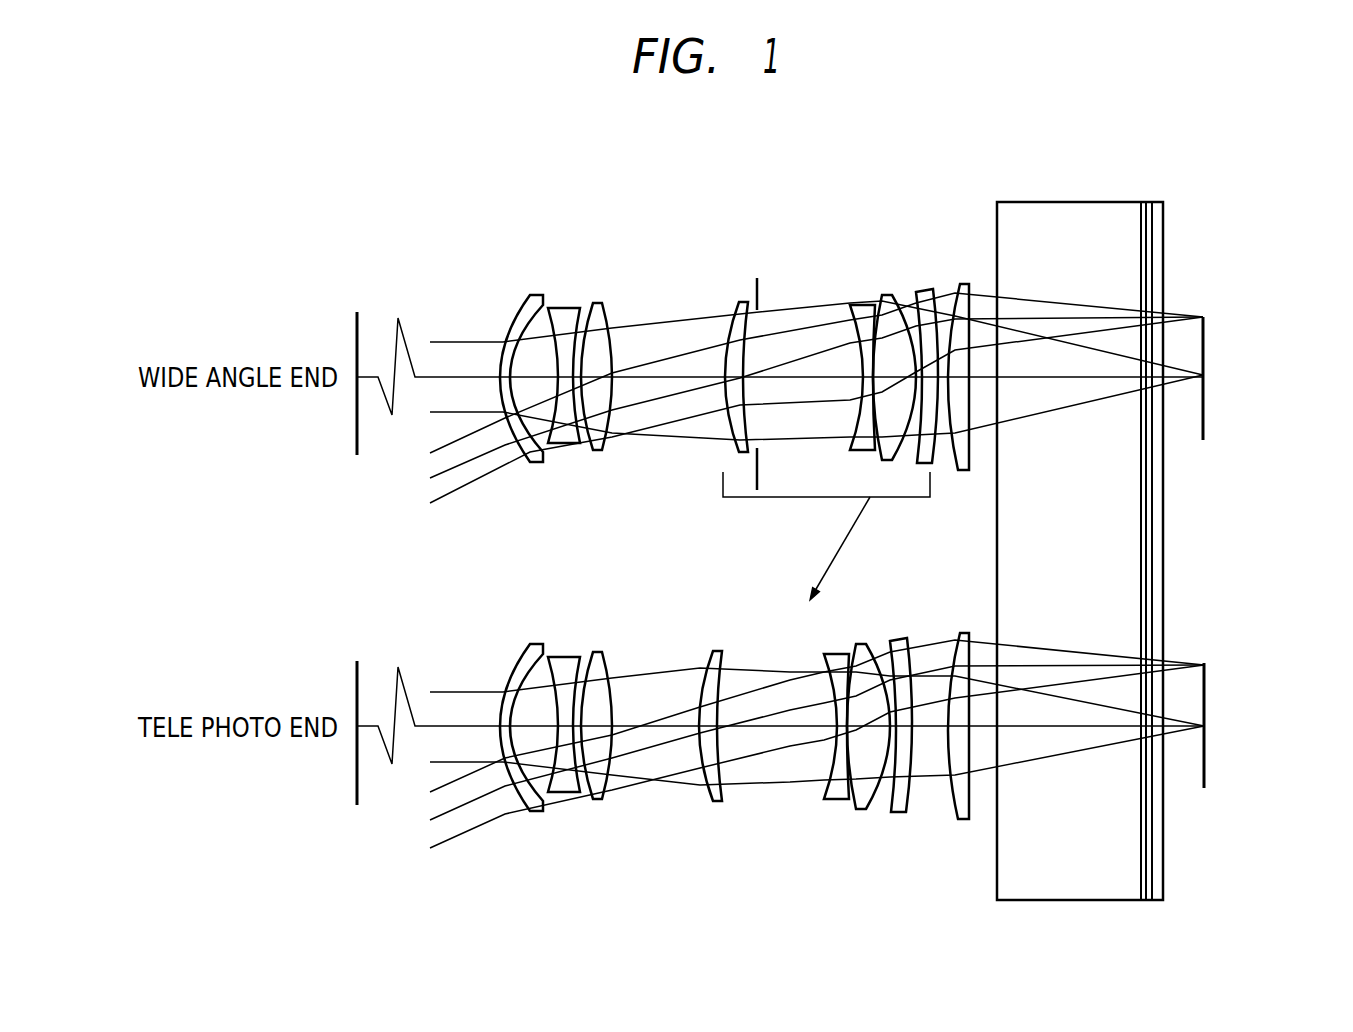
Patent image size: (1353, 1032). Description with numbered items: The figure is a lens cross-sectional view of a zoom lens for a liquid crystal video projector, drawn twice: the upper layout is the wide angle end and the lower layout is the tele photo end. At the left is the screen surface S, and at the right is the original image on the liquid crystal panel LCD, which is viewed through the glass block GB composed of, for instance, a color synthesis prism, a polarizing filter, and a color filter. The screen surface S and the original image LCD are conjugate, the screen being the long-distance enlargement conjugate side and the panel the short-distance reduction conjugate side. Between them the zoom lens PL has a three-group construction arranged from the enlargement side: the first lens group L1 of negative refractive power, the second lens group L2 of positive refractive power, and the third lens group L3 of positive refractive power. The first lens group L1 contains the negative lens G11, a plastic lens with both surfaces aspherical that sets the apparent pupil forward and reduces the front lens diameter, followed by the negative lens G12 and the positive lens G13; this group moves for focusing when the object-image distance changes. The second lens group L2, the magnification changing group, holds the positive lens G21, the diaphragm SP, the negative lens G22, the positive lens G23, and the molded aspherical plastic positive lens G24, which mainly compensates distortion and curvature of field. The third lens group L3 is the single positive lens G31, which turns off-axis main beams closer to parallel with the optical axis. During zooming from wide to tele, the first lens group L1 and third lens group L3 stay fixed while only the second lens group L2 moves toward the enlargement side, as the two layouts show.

The screen surface S is at (357, 327).
The zoom lens PL is at (543, 165).
The first lens group L1 is at (512, 227).
The second lens group L2 is at (727, 227).
The third lens group L3 is at (985, 227).
The negative lens G11 is at (527, 297).
The negative lens G12 is at (566, 308).
The positive lens G13 is at (599, 303).
The diaphragm SP is at (757, 280).
The positive lens G21 is at (750, 318).
The negative lens G22 is at (852, 306).
The positive lens G23 is at (886, 297).
The positive lens G24 is at (925, 290).
The positive lens G31 is at (966, 285).
The glass block GB is at (1141, 551).
The liquid crystal panel LCD is at (1222, 344).